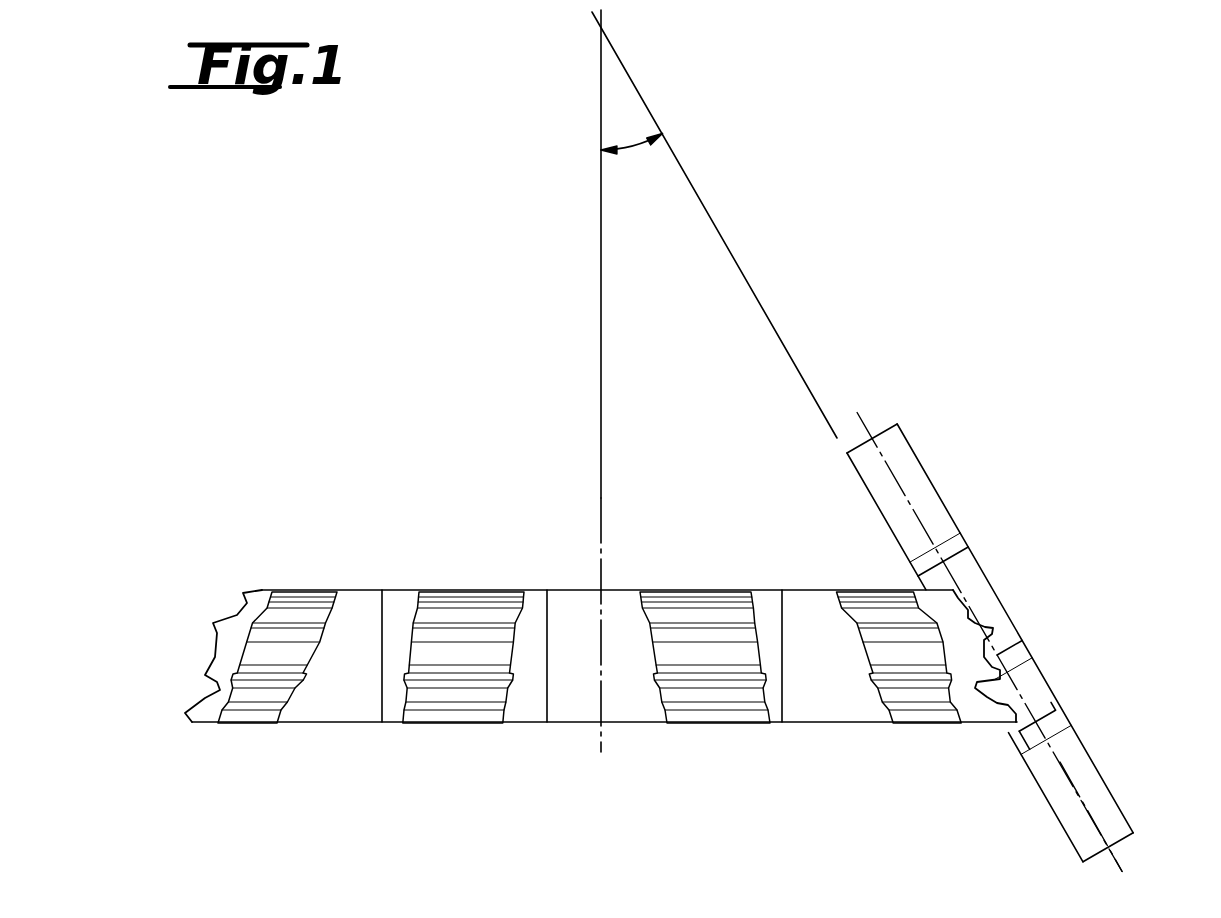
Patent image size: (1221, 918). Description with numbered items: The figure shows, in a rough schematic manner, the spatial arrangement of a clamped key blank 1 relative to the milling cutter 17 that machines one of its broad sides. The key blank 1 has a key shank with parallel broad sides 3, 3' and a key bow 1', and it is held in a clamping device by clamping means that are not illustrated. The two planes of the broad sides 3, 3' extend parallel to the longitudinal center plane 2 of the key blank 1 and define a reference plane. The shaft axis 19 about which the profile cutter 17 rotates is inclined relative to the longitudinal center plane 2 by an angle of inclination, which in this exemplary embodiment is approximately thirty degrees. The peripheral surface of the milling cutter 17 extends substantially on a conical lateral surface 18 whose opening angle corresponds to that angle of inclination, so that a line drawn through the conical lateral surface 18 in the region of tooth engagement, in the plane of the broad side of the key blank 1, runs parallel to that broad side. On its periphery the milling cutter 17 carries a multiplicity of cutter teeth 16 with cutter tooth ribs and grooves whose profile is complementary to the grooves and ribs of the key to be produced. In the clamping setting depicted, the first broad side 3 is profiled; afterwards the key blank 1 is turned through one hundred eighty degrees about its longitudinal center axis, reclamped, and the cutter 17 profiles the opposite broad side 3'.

The key blank 1 is at (990, 643).
The key bow 1' is at (989, 641).
The longitudinal center plane 2 is at (1108, 787).
The broad side 3 is at (1036, 776).
The broad side 3' is at (1068, 652).
The cutter teeth 16 is at (215, 708).
The milling cutter 17 is at (643, 728).
The conical lateral surface 18 is at (775, 318).
The shaft axis 19 is at (600, 550).